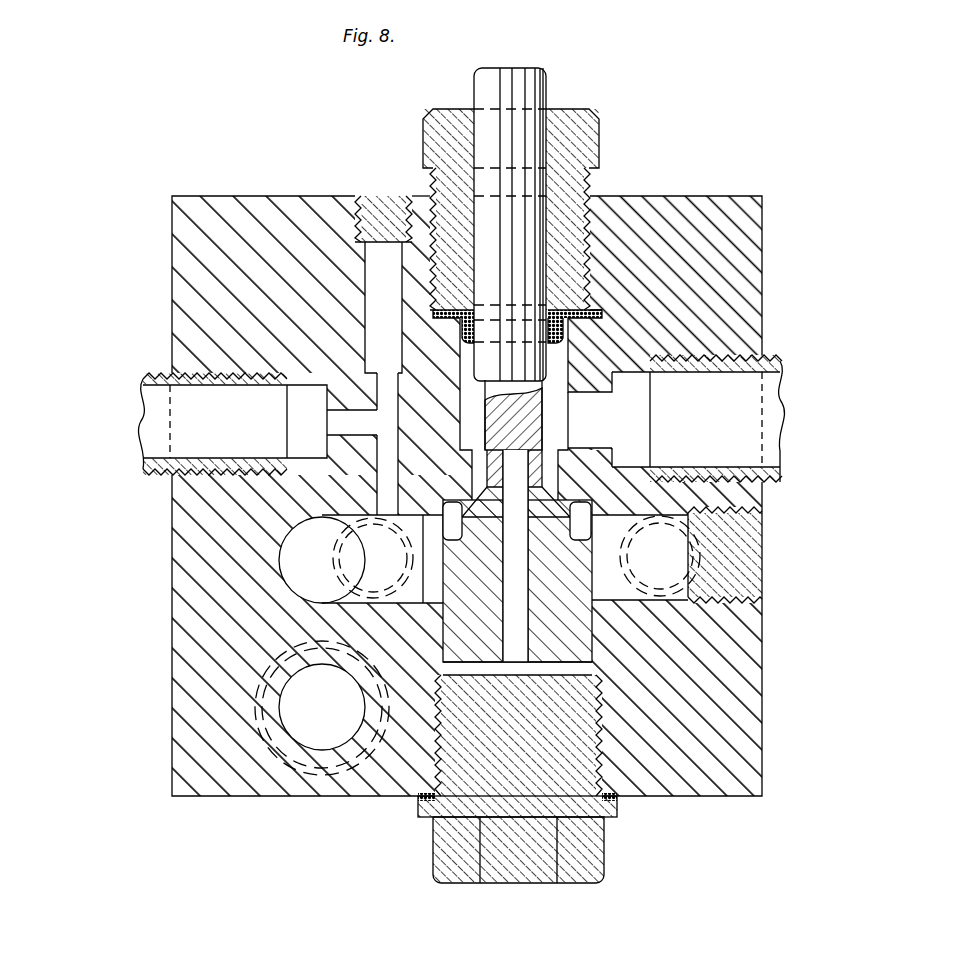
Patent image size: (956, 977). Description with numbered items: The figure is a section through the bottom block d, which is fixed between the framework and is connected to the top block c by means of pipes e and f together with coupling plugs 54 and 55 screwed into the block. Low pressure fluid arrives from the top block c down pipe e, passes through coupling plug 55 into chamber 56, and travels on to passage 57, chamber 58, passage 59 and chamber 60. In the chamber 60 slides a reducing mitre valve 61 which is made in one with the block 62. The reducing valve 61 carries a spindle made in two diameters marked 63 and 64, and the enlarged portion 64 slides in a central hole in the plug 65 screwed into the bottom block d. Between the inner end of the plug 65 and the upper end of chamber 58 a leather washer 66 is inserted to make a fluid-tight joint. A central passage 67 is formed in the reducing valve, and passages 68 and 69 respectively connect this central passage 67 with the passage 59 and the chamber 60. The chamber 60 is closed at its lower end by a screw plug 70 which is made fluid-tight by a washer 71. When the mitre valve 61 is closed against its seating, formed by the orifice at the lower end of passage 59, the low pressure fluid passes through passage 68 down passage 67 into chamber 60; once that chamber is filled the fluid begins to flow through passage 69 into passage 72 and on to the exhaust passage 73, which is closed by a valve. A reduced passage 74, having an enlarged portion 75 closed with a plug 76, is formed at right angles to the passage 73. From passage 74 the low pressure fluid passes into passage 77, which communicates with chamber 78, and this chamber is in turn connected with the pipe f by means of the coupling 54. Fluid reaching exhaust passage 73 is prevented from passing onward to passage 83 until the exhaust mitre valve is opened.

The bottom block d is at (700, 196).
The top block c is at (317, 188).
The pipe e is at (782, 388).
The pipe f is at (142, 444).
The coupling plug 54 is at (147, 373).
The coupling plug 55 is at (780, 358).
The chamber 56 is at (631, 419).
The passage 57 is at (587, 420).
The chamber 58 is at (558, 406).
The passage 59 is at (528, 470).
The chamber 60 is at (580, 520).
The reducing mitre valve 61 is at (472, 482).
The block 62 is at (445, 645).
The spindle portion 63 is at (513, 413).
The spindle portion 64 is at (487, 72).
The plug 65 is at (433, 115).
The leather washer 66 is at (570, 318).
The central passage 67 is at (517, 556).
The passage 68 is at (542, 462).
The passage 69 is at (462, 520).
The screw plug 70 is at (604, 870).
The washer 71 is at (425, 798).
The passage 72 is at (382, 559).
The exhaust passage 73 is at (322, 560).
The reduced passage 74 is at (389, 444).
The enlarged portion 75 is at (383, 307).
The plug 76 is at (381, 196).
The passage 77 is at (358, 408).
The chamber 78 is at (307, 421).
The passage 83 is at (322, 708).